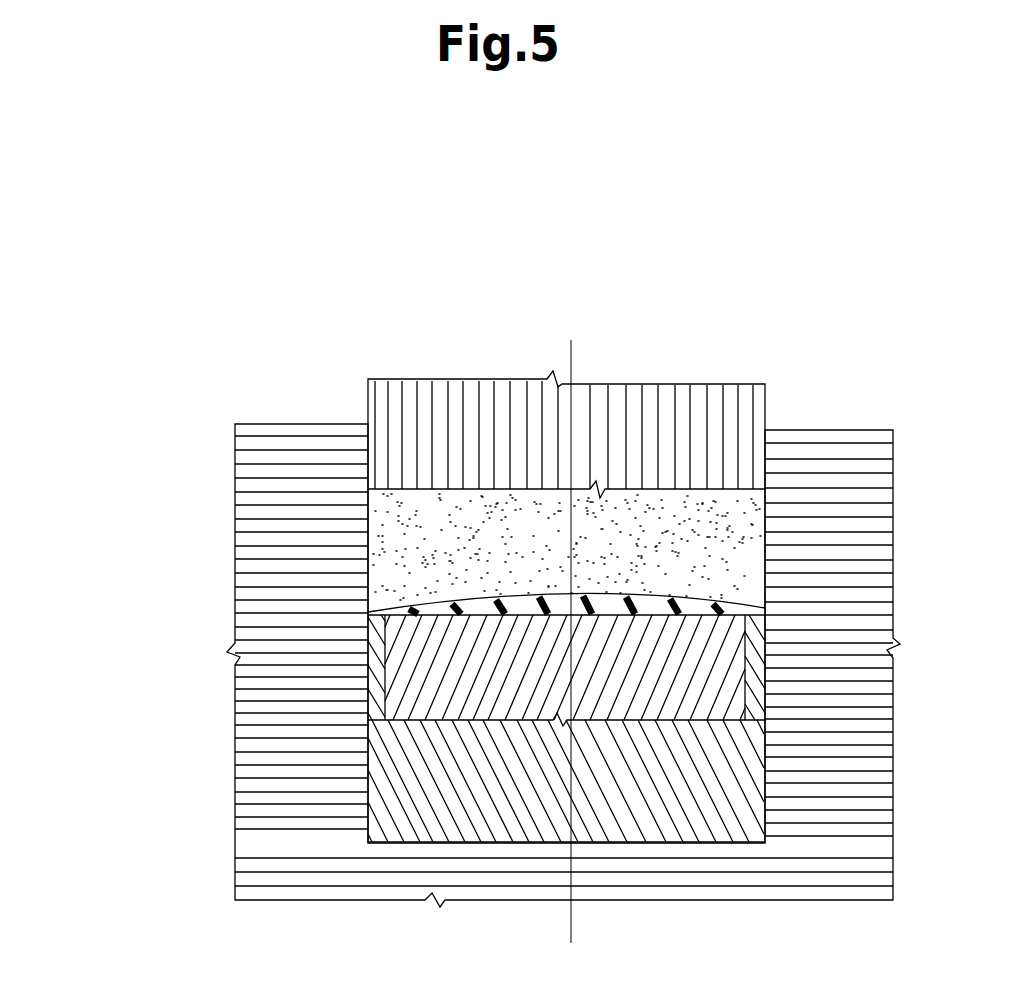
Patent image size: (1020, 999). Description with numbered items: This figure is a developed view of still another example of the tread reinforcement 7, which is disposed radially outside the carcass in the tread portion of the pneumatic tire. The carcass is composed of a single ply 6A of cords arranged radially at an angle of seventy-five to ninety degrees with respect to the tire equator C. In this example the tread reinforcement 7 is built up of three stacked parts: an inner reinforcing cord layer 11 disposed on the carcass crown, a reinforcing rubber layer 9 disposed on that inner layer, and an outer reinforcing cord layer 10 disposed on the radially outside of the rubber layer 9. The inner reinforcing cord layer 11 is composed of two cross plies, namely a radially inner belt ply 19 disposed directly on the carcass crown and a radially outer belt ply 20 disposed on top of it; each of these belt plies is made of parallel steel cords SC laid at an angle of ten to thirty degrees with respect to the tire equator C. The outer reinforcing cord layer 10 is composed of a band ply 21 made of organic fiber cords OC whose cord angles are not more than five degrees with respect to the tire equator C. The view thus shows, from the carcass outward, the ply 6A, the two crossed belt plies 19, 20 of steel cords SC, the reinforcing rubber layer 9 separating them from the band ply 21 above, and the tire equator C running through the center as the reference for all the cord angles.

The ply 6A is at (267, 433).
The tread reinforcement 7 is at (411, 629).
The outer reinforcing cord layer 10 is at (429, 433).
The band ply 21 is at (429, 433).
The reinforcing rubber layer 9 is at (387, 573).
The inner reinforcing cord layer 11 is at (427, 802).
The radially outer belt ply 20 is at (407, 687).
The radially inner belt ply 19 is at (446, 846).
The organic fiber cords OC is at (658, 413).
The steel cords SC is at (497, 703).
The tire equator C is at (570, 662).